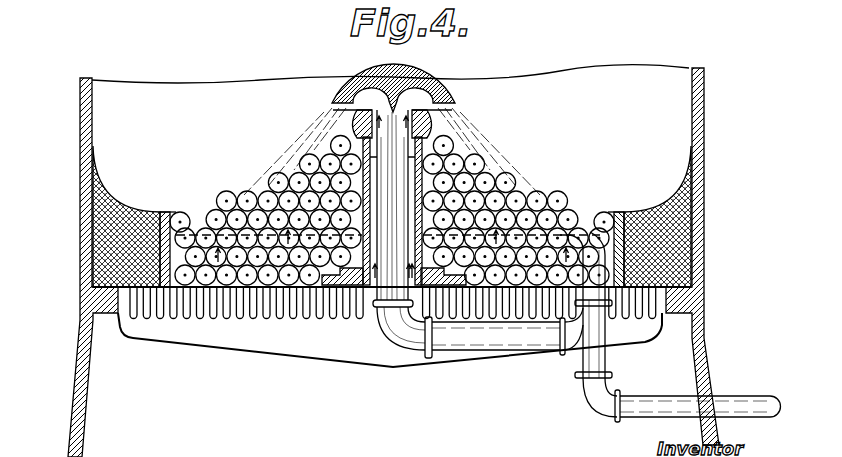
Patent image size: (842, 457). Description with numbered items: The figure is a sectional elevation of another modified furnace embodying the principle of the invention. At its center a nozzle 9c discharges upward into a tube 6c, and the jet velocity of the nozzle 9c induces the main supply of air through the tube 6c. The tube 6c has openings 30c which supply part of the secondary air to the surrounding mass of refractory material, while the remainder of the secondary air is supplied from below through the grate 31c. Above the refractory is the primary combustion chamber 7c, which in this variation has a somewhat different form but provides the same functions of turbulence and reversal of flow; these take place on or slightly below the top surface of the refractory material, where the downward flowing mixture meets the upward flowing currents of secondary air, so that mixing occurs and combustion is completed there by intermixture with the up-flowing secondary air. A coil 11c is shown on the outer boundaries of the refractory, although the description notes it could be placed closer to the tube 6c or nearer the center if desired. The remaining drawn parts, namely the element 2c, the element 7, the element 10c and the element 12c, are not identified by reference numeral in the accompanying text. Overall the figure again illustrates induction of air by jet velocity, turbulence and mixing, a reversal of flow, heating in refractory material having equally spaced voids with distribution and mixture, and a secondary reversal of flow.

The tank wall 2c is at (698, 115).
The tube 6c is at (430, 153).
The spray cap 7 is at (412, 90).
The primary combustion chamber 7c is at (245, 200).
The nozzle 9c is at (388, 168).
The supply pipe 10c is at (495, 340).
The coil 11c is at (605, 210).
The drain pipe 12c is at (742, 403).
The openings 30c is at (463, 227).
The grate 31c is at (245, 335).